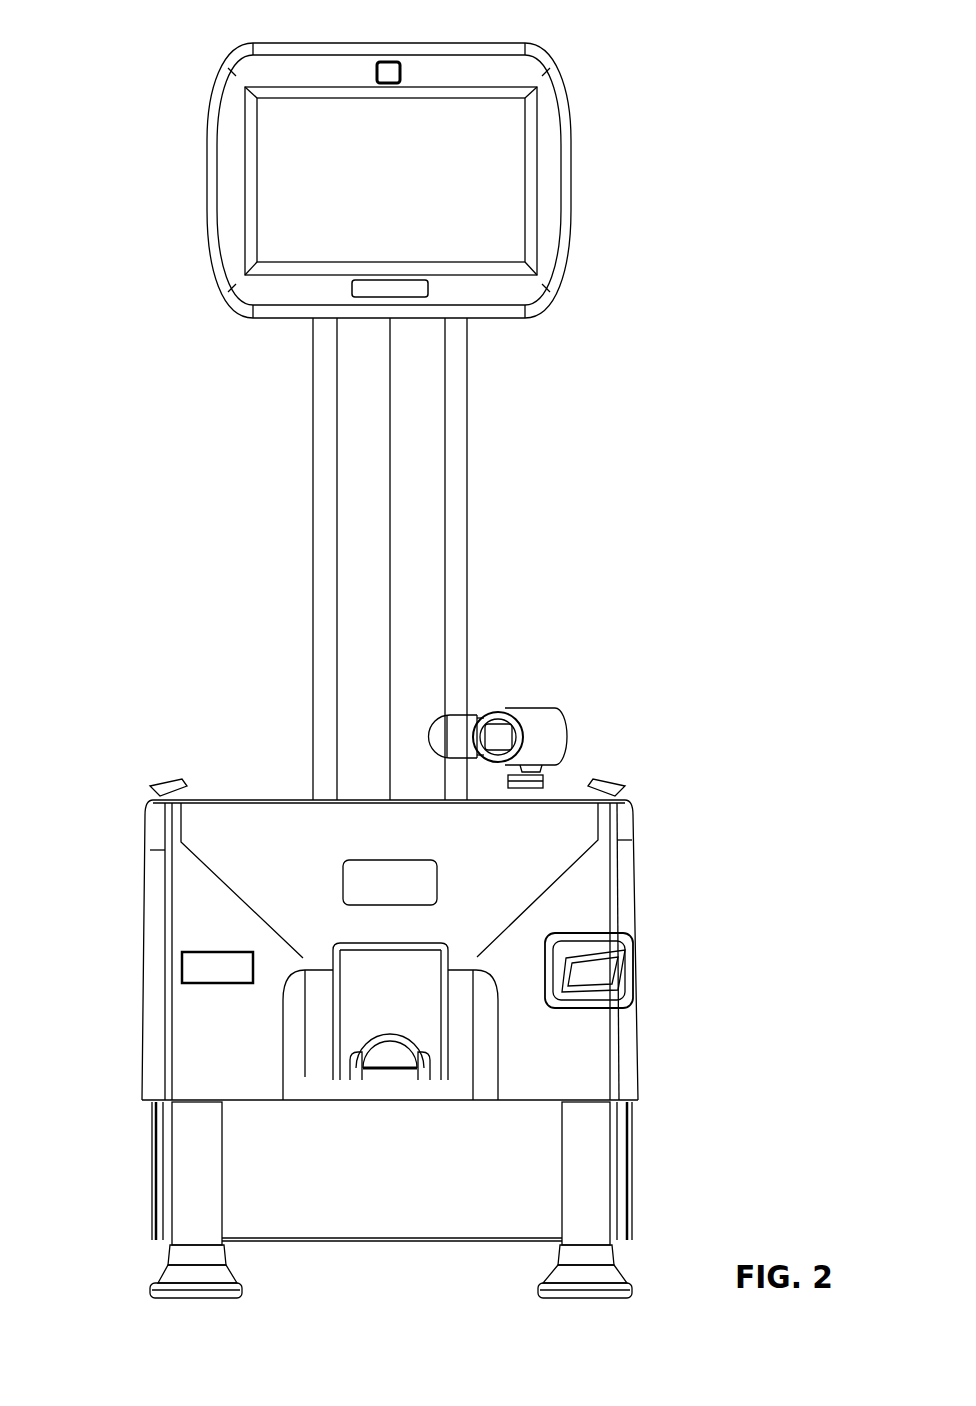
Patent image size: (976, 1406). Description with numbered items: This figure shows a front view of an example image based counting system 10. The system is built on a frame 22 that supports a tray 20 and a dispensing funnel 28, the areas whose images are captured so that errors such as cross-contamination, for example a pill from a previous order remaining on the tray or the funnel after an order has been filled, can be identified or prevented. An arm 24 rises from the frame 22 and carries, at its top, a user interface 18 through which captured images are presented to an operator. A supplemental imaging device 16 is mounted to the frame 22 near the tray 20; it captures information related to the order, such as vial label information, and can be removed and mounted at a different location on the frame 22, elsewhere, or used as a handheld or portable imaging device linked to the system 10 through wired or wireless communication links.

The image based counting system 10 is at (110, 42).
The supplemental imaging device 16 is at (527, 705).
The user interface 18 is at (391, 181).
The tray 20 is at (298, 790).
The frame 22 is at (150, 1190).
The arm 24 is at (465, 505).
The dispensing funnel 28 is at (376, 1098).